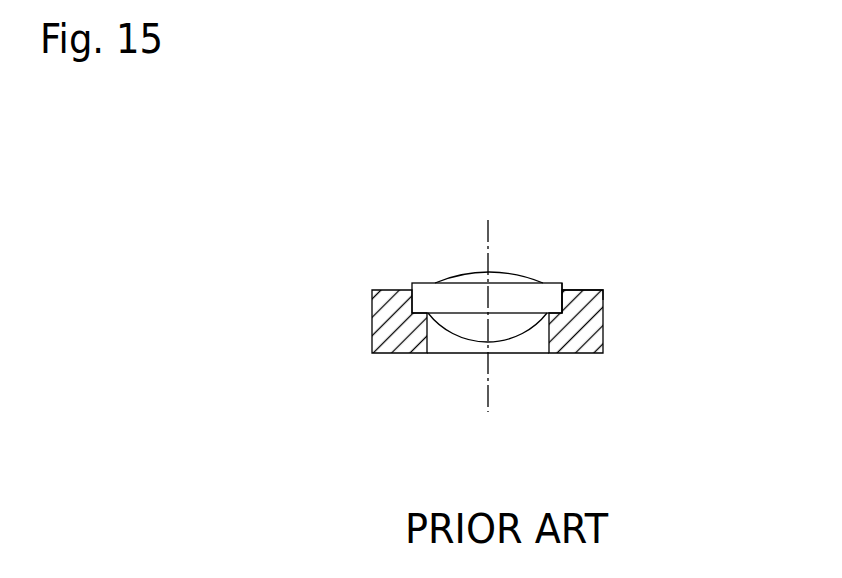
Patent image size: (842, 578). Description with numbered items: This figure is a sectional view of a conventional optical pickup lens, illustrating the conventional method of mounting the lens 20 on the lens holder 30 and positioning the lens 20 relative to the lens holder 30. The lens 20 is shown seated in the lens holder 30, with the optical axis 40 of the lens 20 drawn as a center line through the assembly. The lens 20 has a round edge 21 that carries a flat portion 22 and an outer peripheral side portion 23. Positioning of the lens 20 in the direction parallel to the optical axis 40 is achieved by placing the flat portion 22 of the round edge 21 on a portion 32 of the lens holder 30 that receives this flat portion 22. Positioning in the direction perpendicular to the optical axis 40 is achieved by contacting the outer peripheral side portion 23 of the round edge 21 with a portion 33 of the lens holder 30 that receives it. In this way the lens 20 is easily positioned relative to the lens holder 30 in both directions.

The lens 20 is at (560, 262).
The round edge 21 is at (576, 288).
The flat portion 22 is at (606, 373).
The portion of the lens holder which receives the flat portion 32 is at (562, 313).
The outer peripheral side portion 23 is at (657, 313).
The portion of the lens holder which receives the outer peripheral side portion 33 is at (657, 313).
The lens holder 30 is at (562, 373).
The optical axis 40 is at (491, 233).